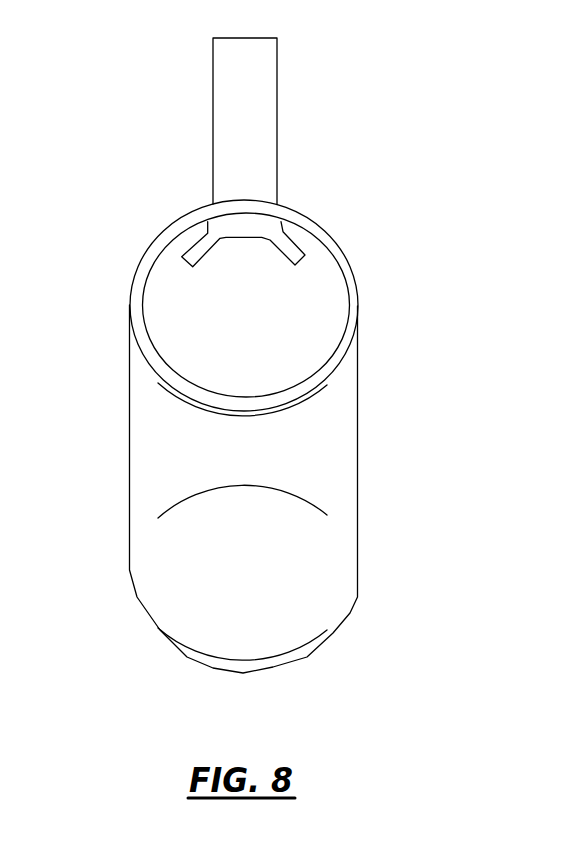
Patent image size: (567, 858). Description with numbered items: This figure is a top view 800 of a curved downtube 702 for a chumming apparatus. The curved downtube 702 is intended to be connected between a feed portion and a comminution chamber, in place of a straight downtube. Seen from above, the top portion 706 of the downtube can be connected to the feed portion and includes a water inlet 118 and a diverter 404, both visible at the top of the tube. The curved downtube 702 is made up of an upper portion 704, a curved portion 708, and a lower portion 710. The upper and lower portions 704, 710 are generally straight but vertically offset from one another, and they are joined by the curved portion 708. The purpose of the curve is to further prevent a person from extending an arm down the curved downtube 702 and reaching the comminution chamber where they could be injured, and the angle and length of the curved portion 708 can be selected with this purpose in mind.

The top view 800 is at (418, 70).
The water inlet 118 is at (213, 112).
The diverter 404 is at (253, 228).
The curved downtube 702 is at (118, 482).
The upper portion 704 is at (130, 307).
The top portion 706 is at (175, 298).
The curved portion 708 is at (297, 447).
The lower portion 710 is at (192, 593).